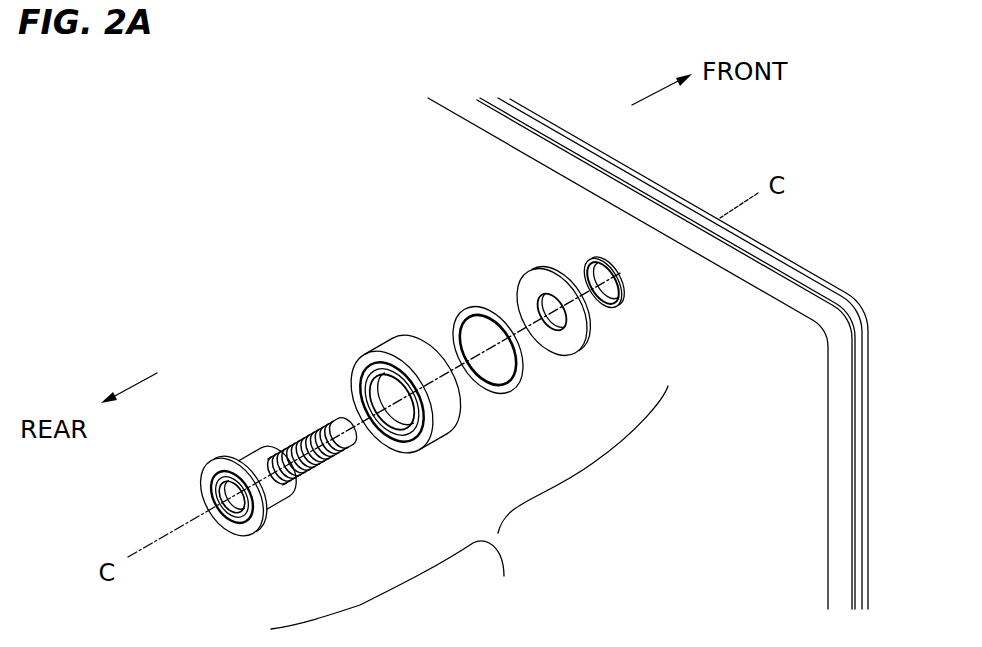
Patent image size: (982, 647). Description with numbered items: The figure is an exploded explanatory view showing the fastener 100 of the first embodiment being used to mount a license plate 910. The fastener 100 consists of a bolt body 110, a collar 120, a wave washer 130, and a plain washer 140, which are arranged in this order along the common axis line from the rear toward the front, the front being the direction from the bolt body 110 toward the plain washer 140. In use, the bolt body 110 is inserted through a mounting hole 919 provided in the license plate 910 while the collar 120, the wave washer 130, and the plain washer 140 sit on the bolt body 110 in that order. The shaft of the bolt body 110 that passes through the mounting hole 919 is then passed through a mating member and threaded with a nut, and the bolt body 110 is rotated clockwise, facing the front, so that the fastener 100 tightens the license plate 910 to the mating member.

The fastener 100 is at (498, 533).
The bolt body 110 is at (238, 536).
The collar 120 is at (411, 447).
The wave washer 130 is at (499, 388).
The plain washer 140 is at (566, 346).
The license plate 910 is at (770, 248).
The mounting hole 919 is at (578, 264).